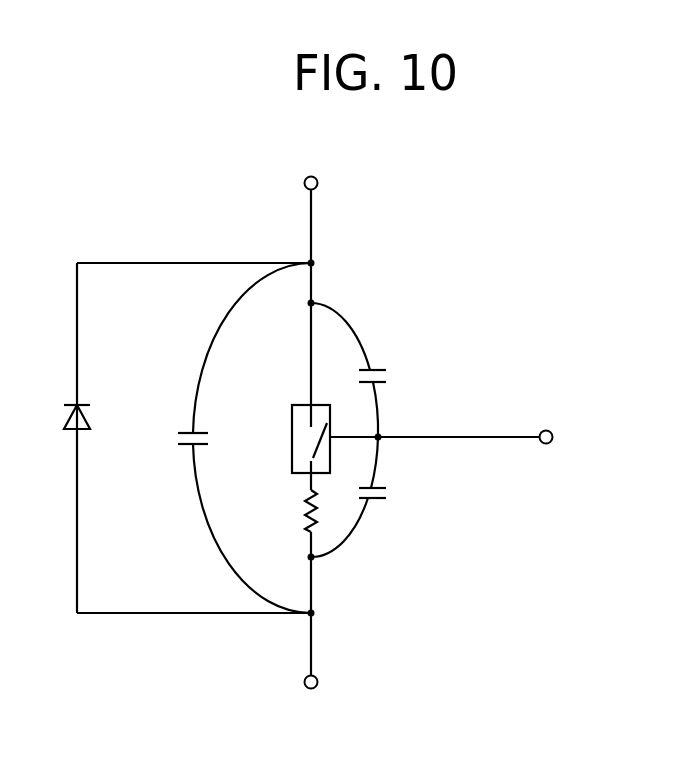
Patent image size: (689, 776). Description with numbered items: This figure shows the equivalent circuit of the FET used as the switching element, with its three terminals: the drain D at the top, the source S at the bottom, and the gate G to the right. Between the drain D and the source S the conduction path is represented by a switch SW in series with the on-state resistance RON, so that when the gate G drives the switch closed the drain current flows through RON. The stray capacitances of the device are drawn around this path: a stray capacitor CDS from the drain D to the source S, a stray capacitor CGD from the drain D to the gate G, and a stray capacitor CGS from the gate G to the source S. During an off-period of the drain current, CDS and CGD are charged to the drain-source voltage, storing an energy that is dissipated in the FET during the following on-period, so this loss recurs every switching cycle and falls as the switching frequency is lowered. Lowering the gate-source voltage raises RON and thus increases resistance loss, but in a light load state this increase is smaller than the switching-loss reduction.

The drain D is at (323, 193).
The gate G is at (549, 458).
The source S is at (322, 682).
The switch SW is at (286, 447).
The on-state resistance RON is at (283, 511).
The stray capacitor from drain to gate CGD is at (379, 370).
The stray capacitor from gate to source CGS is at (379, 497).
The stray capacitor from drain to source CDS is at (221, 438).